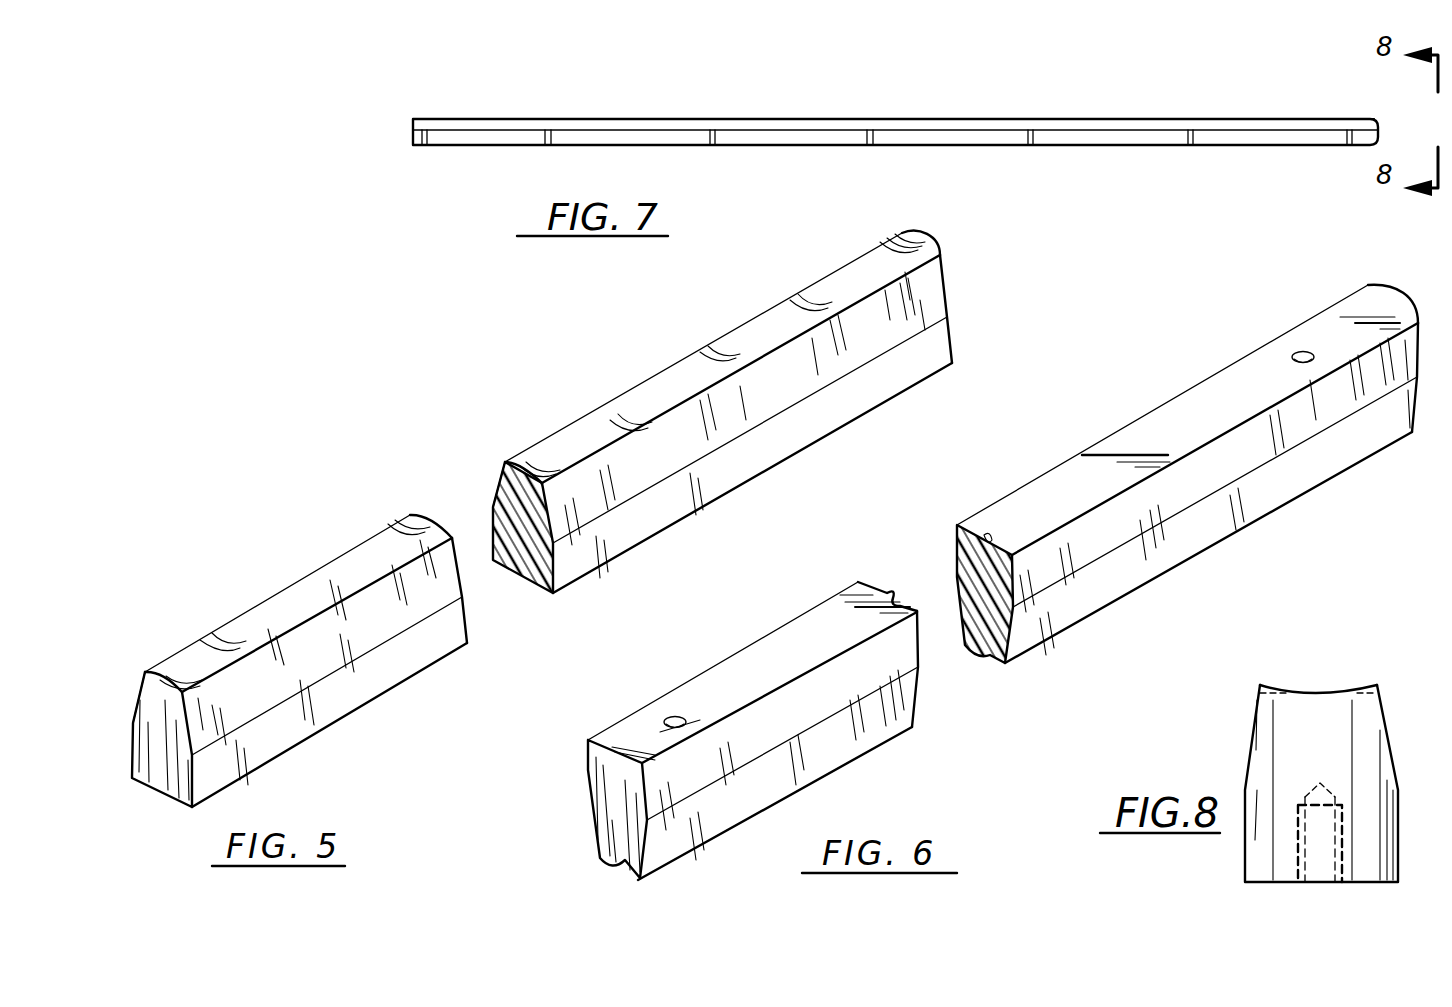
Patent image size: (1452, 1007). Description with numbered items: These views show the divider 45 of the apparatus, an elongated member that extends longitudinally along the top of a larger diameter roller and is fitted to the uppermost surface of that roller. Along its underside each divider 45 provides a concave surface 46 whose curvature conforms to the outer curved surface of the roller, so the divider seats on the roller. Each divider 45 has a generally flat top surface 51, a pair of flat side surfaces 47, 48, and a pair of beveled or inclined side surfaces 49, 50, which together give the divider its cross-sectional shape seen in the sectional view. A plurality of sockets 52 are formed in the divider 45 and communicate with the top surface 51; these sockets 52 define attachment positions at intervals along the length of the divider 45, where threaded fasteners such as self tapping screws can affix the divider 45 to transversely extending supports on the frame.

In FIG. 7, the divider 45 is at (678, 147).
In FIG. 5, the divider 45 is at (411, 514).
In FIG. 6, the divider 45 is at (798, 614).
In FIG. 7, the concave surface 46 is at (881, 115).
In FIG. 5, the concave surface 46 is at (681, 366).
In FIG. 6, the concave surface 46 is at (622, 866).
In FIG. 8, the concave surface 46 is at (1320, 683).
In FIG. 6, the flat side surface 47 is at (848, 683).
In FIG. 8, the flat side surface 47 is at (1252, 729).
In FIG. 5, the flat side surface 48 is at (430, 648).
In FIG. 8, the flat side surface 48 is at (1398, 817).
In FIG. 6, the beveled side surface 49 is at (778, 775).
In FIG. 8, the beveled side surface 49 is at (1245, 858).
In FIG. 5, the beveled side surface 50 is at (400, 628).
In FIG. 8, the beveled side surface 50 is at (1385, 722).
In FIG. 7, the top surface 51 is at (1010, 147).
In FIG. 6, the top surface 51 is at (1230, 386).
In FIG. 7, the socket 52 is at (547, 139).
In FIG. 6, the socket 52 is at (1303, 350).
In FIG. 8, the socket 52 is at (1322, 872).